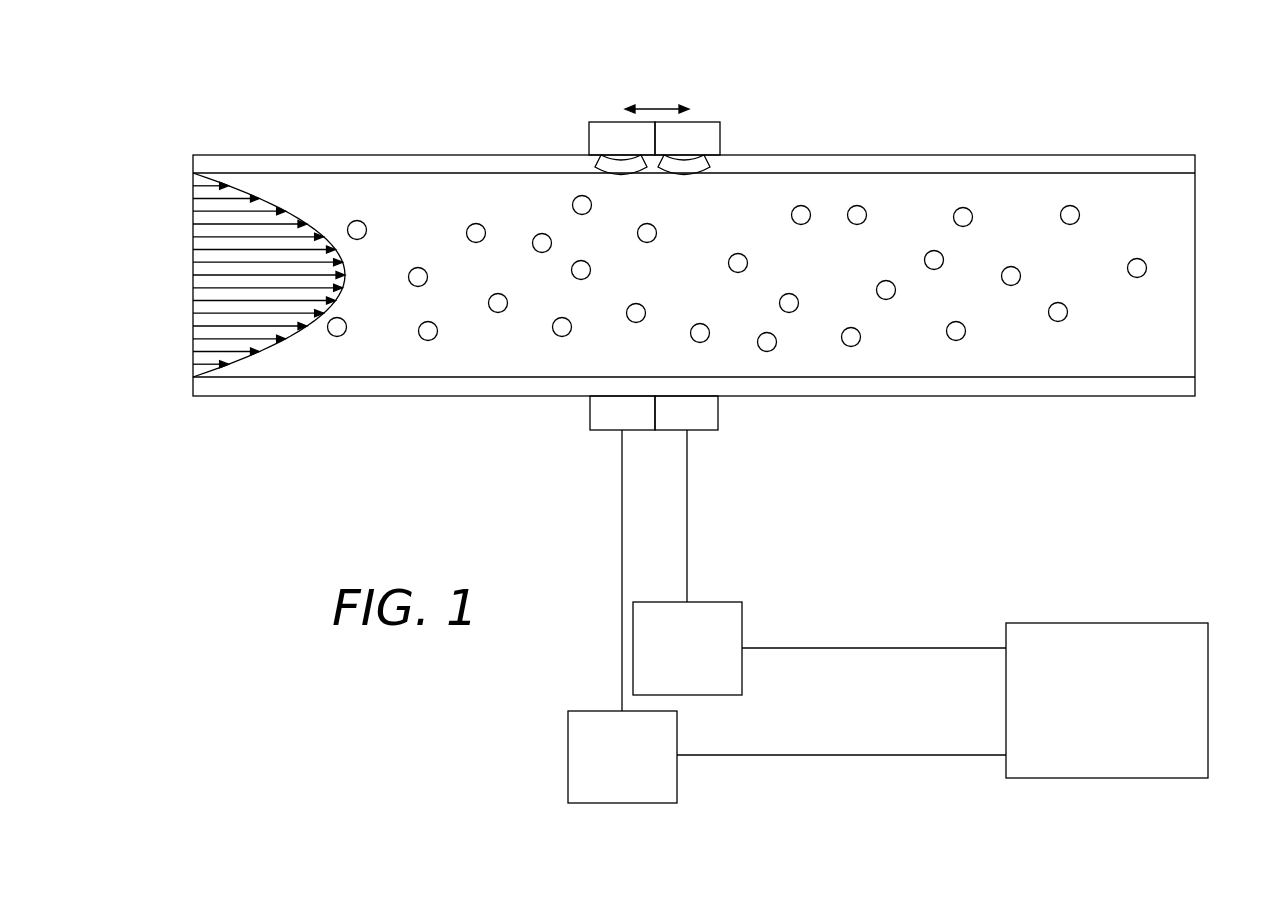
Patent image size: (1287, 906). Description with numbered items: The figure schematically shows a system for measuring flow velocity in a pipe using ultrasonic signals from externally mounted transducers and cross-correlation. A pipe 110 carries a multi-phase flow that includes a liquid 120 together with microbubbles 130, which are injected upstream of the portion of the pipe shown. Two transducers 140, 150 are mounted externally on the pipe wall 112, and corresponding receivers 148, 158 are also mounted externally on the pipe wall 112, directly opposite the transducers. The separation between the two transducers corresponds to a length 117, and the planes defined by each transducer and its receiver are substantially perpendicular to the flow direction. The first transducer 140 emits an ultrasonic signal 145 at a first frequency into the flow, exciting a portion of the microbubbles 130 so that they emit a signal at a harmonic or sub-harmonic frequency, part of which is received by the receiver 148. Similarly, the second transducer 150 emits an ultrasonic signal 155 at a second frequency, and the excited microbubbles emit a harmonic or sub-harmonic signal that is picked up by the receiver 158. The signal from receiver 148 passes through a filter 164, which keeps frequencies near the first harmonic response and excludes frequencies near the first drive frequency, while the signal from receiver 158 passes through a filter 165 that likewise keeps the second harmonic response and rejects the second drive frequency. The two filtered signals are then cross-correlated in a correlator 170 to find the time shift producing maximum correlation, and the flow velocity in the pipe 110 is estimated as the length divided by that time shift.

The pipe 110 is at (386, 398).
The pipe wall 112 is at (1130, 388).
The length 117 is at (663, 76).
The liquid 120 is at (402, 220).
The microbubbles 130 is at (1012, 90).
The transducer 140 is at (603, 122).
The ultrasonic signal 145 is at (600, 180).
The receiver 148 is at (590, 413).
The transducer 150 is at (713, 122).
The ultrasonic signal 155 is at (683, 180).
The receiver 158 is at (718, 412).
The filter 164 is at (787, 616).
The filter 165 is at (819, 562).
The correlator 170 is at (1107, 700).